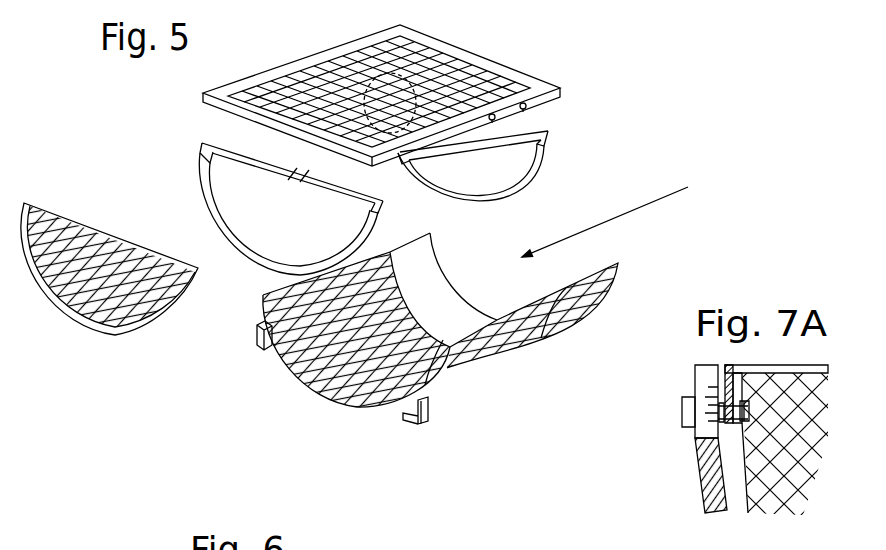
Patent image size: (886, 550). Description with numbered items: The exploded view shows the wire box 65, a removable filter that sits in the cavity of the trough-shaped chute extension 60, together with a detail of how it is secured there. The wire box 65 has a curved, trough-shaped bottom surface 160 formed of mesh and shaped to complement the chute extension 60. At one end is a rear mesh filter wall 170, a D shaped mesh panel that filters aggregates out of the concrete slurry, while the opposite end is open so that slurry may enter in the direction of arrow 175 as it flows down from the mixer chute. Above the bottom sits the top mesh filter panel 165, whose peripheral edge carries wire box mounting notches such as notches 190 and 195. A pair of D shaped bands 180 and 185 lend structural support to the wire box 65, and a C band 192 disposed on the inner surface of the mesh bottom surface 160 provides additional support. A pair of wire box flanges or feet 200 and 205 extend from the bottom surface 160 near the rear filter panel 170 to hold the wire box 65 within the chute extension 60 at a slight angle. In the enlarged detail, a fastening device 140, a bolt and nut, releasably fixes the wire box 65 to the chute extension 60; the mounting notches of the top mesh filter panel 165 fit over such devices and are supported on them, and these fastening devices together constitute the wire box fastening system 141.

In FIG. 5, the top mesh filter panel 165 is at (523, 72).
In FIG. 7A, the top mesh filter panel 165 is at (753, 367).
In FIG. 5, the wire box mounting notch 195 is at (533, 107).
In FIG. 5, the wire box mounting notch 190 is at (493, 121).
In FIG. 5, the D shaped band 185 is at (537, 163).
In FIG. 5, the D shaped band 180 is at (380, 225).
In FIG. 5, the rear mesh filter wall 170 is at (62, 217).
In FIG. 5, the arrow 175 is at (652, 205).
In FIG. 5, the bottom surface 160 is at (513, 345).
In FIG. 5, the C band 192 is at (450, 297).
In FIG. 5, the wire box flange 205 is at (255, 343).
In FIG. 5, the wire box flange 200 is at (433, 416).
In FIG. 5, the wire box 65 is at (383, 418).
In FIG. 7A, the wire box 65 is at (700, 377).
In FIG. 7A, the fastening device 140 is at (682, 413).
In FIG. 7A, the wire box fastening system 141 is at (672, 436).
In FIG. 7A, the chute extension 60 is at (748, 505).